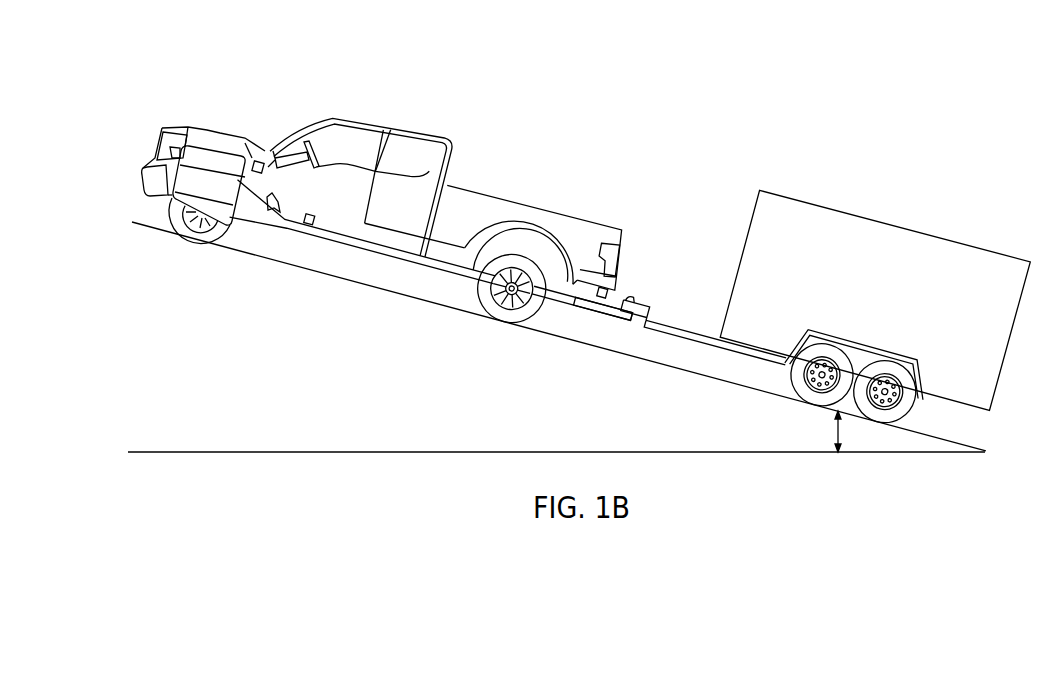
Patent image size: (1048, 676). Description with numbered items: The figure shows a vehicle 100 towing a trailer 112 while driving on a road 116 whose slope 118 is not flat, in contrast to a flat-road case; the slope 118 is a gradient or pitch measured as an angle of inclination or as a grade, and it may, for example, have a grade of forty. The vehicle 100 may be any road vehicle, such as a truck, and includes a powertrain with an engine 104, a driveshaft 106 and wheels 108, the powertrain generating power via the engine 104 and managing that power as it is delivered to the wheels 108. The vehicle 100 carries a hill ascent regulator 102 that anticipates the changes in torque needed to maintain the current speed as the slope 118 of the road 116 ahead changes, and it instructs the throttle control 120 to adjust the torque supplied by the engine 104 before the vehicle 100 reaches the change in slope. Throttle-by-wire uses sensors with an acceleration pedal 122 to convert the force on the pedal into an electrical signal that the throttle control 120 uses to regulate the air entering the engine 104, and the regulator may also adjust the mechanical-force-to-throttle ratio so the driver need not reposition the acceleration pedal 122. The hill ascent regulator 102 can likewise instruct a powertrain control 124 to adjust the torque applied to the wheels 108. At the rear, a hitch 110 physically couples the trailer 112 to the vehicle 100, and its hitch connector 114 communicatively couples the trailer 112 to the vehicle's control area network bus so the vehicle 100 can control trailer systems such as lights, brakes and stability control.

The vehicle 100 is at (302, 130).
The hill ascent regulator 102 is at (256, 160).
The engine 104 is at (186, 127).
The driveshaft 106 is at (341, 243).
The wheels 108 is at (167, 237).
The hitch 110 is at (625, 300).
The trailer 112 is at (960, 238).
The hitch connector 114 is at (601, 299).
The road 116 is at (957, 441).
The slope 118 is at (838, 432).
The throttle control 120 is at (222, 142).
The acceleration pedal 122 is at (271, 213).
The powertrain control 124 is at (305, 228).